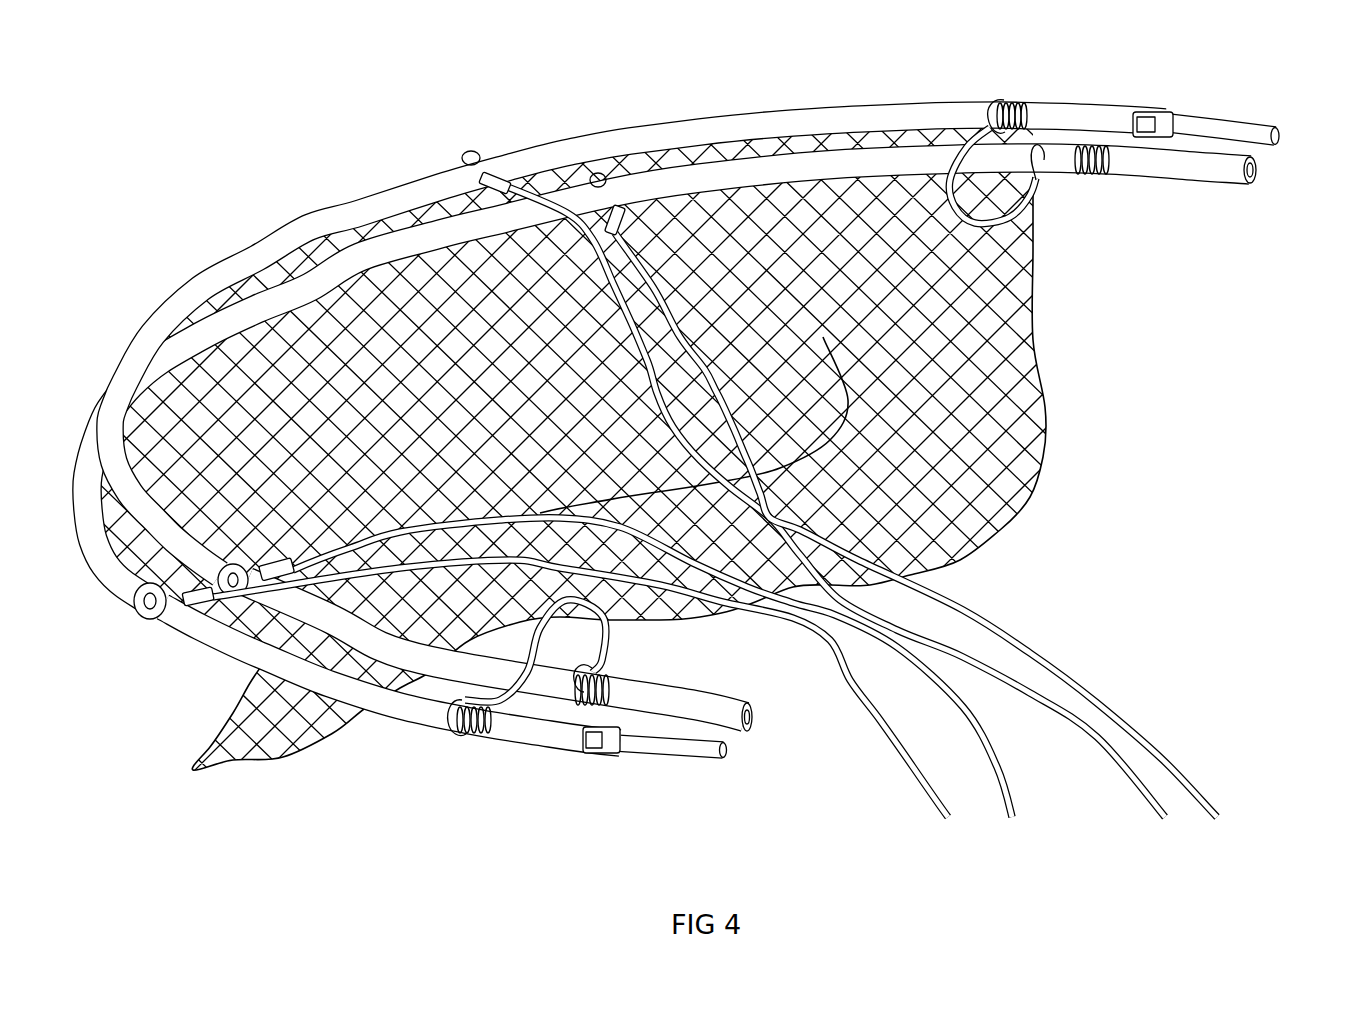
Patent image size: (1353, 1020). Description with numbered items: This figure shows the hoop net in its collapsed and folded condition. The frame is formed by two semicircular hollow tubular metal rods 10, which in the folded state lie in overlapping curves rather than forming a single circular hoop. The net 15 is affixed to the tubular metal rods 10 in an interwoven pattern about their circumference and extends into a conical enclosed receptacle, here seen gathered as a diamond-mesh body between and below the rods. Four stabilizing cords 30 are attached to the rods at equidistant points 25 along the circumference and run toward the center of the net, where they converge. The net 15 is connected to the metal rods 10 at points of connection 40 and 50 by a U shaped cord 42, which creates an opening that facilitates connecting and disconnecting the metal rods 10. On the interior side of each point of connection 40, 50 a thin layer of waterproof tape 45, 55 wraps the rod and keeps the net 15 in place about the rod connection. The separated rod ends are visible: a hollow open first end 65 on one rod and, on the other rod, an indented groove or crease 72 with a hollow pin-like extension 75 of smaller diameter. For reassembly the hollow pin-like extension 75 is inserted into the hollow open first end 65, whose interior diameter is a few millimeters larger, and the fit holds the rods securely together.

The tubular metal rods 10 is at (268, 215).
The net 15 is at (1045, 320).
The equidistant points 25 is at (470, 150).
The stabilizing cords 30 is at (680, 300).
The point of connection 40 is at (1037, 140).
The U shaped cord 42 is at (968, 225).
The waterproof tape 45 is at (1095, 175).
The point of connection 50 is at (985, 100).
The waterproof tape 55 is at (1010, 95).
The hollow open first end 65 is at (1262, 170).
The indented groove or crease 72 is at (1150, 110).
The hollow pin-like extension 75 is at (1205, 123).